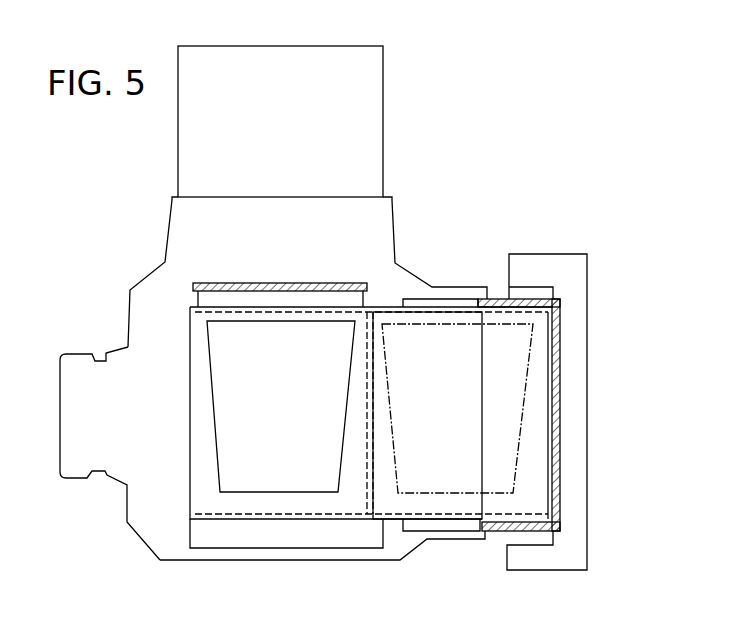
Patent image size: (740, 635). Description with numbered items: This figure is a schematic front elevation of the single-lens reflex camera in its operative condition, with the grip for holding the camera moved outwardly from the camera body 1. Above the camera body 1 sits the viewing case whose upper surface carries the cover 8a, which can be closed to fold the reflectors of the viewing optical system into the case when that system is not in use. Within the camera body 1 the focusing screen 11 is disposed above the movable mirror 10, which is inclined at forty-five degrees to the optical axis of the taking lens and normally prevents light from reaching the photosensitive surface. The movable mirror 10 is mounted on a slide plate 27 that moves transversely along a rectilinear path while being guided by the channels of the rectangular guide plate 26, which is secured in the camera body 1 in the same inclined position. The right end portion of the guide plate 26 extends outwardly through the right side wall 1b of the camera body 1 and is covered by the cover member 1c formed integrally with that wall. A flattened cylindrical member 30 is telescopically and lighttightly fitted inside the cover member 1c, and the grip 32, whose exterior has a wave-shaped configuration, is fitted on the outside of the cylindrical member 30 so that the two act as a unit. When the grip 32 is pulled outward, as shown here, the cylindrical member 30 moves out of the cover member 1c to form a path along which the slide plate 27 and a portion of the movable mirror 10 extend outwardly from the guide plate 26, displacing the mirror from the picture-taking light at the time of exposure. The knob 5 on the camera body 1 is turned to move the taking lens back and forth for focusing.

The cover 8a is at (380, 140).
The camera body 1 is at (165, 232).
The knob 5 is at (77, 478).
The right side wall 1b is at (388, 540).
The cover member 1c is at (452, 297).
The focusing screen 11 is at (290, 283).
The movable mirror 10 is at (233, 487).
The slide plate 27 is at (268, 512).
The guide plate 26 is at (380, 505).
The cylindrical member 30 is at (528, 299).
The grip 32 is at (578, 325).